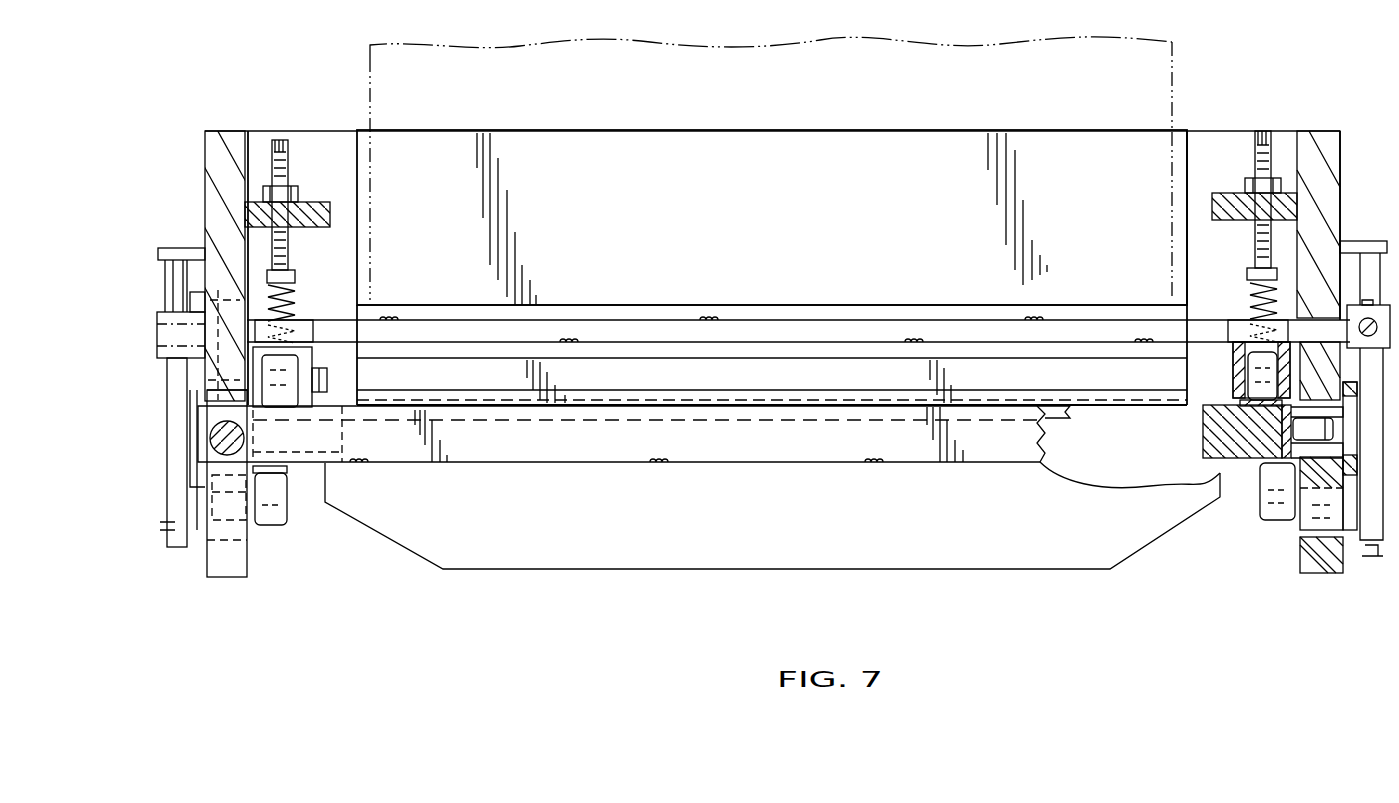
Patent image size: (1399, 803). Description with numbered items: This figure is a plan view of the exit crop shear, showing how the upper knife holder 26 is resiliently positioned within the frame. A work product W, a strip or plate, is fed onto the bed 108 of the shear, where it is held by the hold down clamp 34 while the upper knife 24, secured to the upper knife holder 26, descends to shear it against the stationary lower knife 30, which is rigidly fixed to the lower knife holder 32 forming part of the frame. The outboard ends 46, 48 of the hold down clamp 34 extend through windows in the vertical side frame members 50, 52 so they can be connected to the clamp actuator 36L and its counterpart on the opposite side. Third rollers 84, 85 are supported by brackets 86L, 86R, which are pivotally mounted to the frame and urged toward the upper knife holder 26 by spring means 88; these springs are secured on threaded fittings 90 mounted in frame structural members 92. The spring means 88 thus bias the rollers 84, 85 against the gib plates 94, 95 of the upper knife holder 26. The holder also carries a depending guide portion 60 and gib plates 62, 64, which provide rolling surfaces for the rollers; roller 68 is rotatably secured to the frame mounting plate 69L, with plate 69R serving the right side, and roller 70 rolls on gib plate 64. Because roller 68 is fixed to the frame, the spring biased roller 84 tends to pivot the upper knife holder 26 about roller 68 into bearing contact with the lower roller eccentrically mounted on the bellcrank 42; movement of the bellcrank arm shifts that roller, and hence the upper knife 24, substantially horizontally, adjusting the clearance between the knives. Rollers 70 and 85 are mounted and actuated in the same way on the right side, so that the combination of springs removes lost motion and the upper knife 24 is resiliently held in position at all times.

The work product W is at (1180, 52).
The bed 108 is at (937, 143).
The hold down clamp 34 is at (868, 307).
The lower knife holder 32 is at (355, 377).
The lower knife 30 is at (478, 398).
The upper knife 24 is at (1050, 407).
The upper knife holder 26 is at (797, 450).
The vertical side frame member 50 is at (215, 198).
The vertical side frame member 52 is at (1333, 181).
The hold down clamp actuator 36L is at (172, 320).
The bellcrank 42 is at (174, 552).
The outboard end of hold down clamp 46 is at (220, 307).
The outboard end of hold down clamp 48 is at (1320, 325).
The bracket 86L is at (312, 362).
The bracket 86R is at (1233, 352).
The spring means 88 is at (288, 312).
The threaded fitting 90 is at (290, 248).
The frame structural member 92 is at (317, 210).
The third roller 84 is at (287, 413).
The gib plate 94 is at (273, 432).
The third roller 85 is at (1245, 373).
The gib plate 95 is at (1210, 432).
The depending guide portion 60 is at (1210, 445).
The gib plate 62 is at (290, 478).
The gib plate 64 is at (1252, 465).
The roller 68 is at (278, 508).
The frame mounting plate 69L is at (238, 522).
The frame mounting plate 69R is at (1316, 563).
The roller 70 is at (1262, 508).